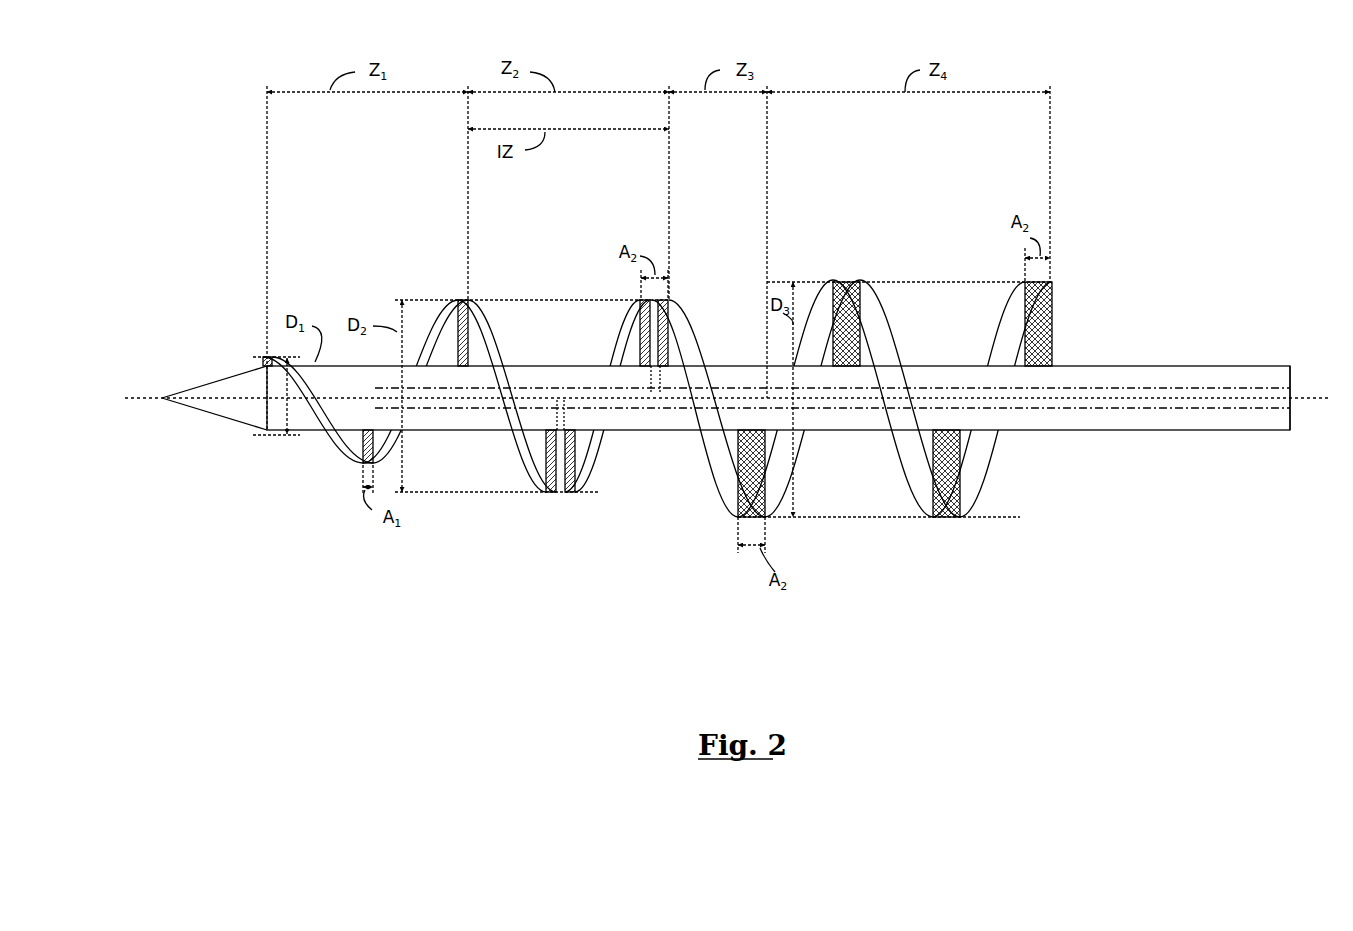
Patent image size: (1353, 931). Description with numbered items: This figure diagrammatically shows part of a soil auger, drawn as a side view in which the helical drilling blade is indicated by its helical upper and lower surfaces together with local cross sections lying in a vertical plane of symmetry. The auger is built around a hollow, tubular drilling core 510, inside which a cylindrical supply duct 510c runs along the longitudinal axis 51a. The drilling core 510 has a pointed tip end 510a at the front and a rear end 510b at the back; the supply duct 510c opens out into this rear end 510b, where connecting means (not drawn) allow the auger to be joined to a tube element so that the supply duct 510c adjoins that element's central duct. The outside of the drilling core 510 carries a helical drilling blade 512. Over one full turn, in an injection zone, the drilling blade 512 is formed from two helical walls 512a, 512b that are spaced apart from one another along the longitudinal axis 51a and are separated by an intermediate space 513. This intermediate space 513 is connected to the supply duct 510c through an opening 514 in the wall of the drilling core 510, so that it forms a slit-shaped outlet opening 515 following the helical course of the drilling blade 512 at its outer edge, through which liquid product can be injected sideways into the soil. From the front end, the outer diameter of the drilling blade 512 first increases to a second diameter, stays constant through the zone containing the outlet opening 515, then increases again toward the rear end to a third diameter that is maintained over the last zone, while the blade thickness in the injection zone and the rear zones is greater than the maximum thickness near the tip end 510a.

The drilling core 510 is at (1130, 375).
The pointed tip end 510a is at (210, 383).
The rear end 510b is at (1290, 376).
The supply duct 510c is at (1165, 390).
The longitudinal axis 51a is at (137, 403).
The helical drilling blade 512 is at (427, 305).
The helical wall 512a is at (573, 472).
The helical wall 512b is at (555, 475).
The intermediate space 513 is at (560, 450).
The opening 514 is at (557, 417).
The outlet opening 515 is at (562, 493).